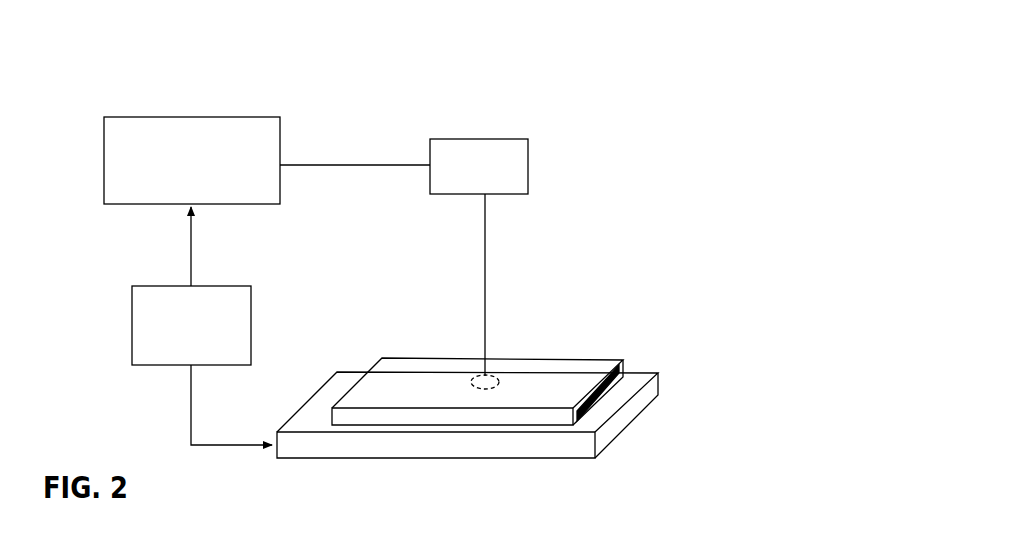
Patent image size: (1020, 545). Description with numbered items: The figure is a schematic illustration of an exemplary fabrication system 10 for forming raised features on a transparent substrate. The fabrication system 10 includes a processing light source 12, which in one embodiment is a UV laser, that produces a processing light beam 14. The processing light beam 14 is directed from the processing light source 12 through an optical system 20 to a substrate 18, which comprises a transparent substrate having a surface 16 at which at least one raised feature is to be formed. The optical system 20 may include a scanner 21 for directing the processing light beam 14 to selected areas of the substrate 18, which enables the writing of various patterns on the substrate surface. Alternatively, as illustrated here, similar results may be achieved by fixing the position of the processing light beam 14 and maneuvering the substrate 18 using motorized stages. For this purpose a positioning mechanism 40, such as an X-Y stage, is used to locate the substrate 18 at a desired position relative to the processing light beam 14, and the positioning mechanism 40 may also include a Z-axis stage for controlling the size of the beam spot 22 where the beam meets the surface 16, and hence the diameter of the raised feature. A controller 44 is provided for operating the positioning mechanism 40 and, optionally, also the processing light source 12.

The fabrication system 10 is at (358, 70).
The processing light source 12 is at (192, 160).
The processing light beam 14 is at (313, 165).
The surface 16 is at (415, 368).
The substrate 18 is at (582, 371).
The optical system 20 is at (496, 136).
The scanner 21 is at (528, 163).
The beam spot 22 is at (480, 388).
The positioning mechanism 40 is at (537, 450).
The controller 44 is at (202, 326).